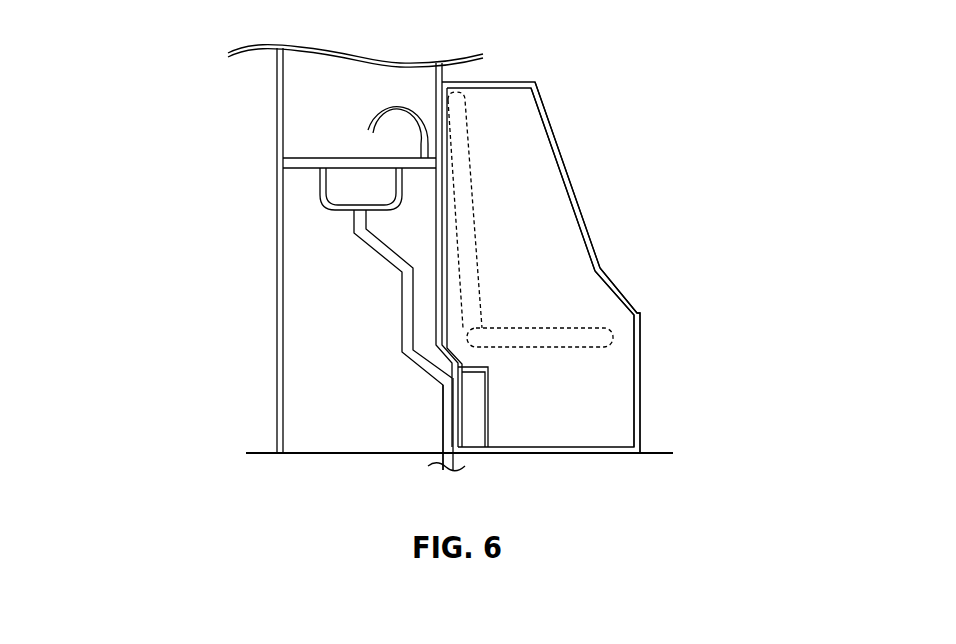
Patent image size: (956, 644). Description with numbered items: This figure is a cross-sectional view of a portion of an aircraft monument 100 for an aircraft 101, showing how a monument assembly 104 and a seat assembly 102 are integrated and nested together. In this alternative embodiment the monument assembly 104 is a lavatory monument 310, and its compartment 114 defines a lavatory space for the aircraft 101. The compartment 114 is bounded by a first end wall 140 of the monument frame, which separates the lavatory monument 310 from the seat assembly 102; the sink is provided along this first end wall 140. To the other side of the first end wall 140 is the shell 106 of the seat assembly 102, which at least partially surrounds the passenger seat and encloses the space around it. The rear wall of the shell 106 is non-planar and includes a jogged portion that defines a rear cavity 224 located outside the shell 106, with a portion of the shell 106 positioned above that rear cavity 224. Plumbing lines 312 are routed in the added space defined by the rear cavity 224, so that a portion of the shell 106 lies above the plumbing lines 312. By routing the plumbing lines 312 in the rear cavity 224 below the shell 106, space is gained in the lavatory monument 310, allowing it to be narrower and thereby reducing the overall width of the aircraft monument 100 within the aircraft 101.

The aircraft monument 100 is at (608, 122).
The aircraft 101 is at (660, 202).
The seat assembly 102 is at (612, 260).
The monument assembly 104 is at (237, 187).
The shell 106 is at (578, 190).
The compartment 114 is at (307, 85).
The first end wall 140 is at (442, 240).
The rear cavity 224 is at (433, 430).
The lavatory monument 310 is at (265, 303).
The plumbing lines 312 is at (442, 393).